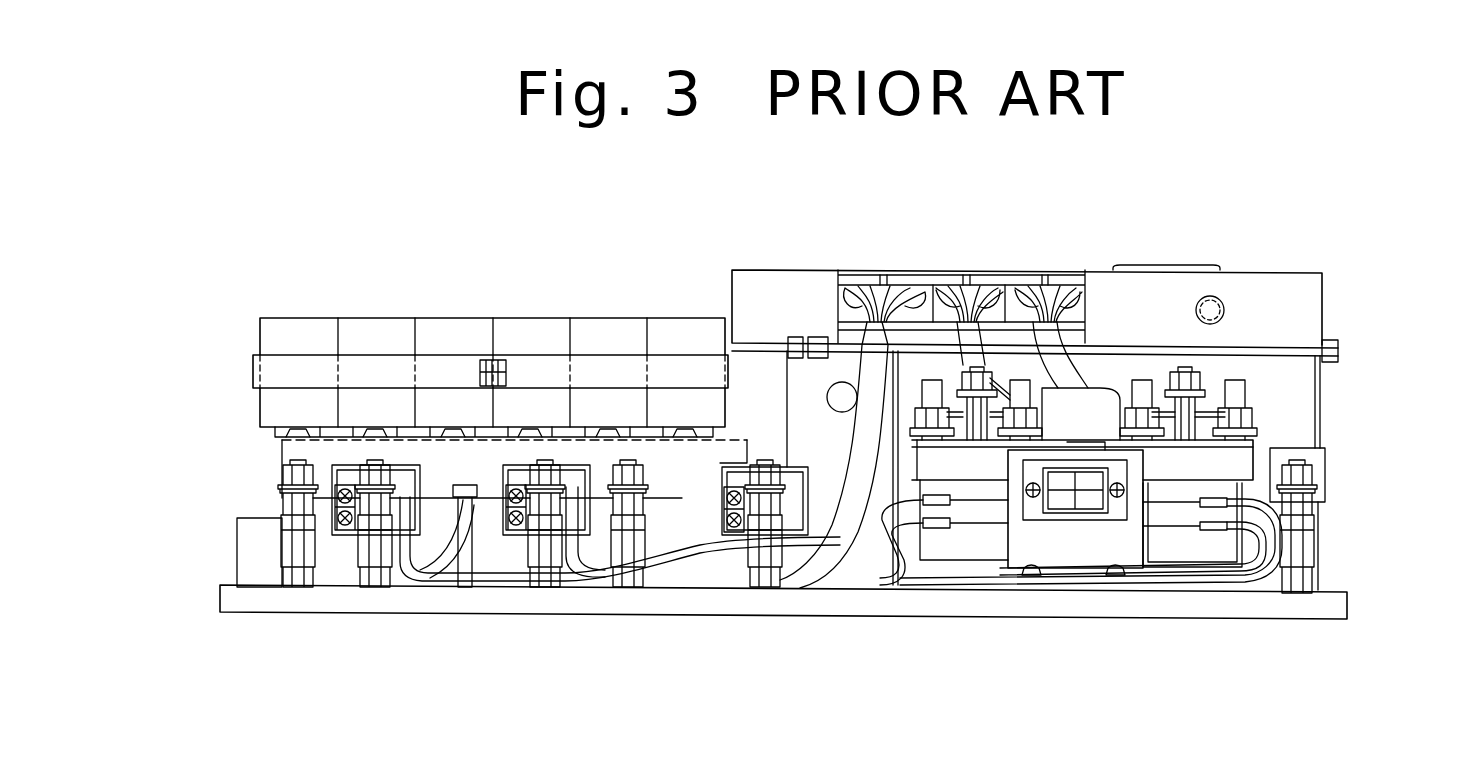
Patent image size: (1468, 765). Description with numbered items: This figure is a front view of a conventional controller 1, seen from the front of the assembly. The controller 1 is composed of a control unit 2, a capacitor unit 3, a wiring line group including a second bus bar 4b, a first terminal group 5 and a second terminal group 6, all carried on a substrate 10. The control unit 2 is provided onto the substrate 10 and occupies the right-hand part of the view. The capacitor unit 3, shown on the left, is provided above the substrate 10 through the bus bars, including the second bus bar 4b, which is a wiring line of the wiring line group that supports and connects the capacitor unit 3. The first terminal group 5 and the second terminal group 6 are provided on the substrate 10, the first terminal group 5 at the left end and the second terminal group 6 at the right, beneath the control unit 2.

The controller 1 is at (1371, 221).
The control unit 2 is at (1302, 312).
The capacitor unit 3 is at (515, 336).
The second bus bar 4b is at (682, 498).
The first terminal group 5 is at (231, 478).
The second terminal group 6 is at (1287, 420).
The substrate 10 is at (1332, 607).